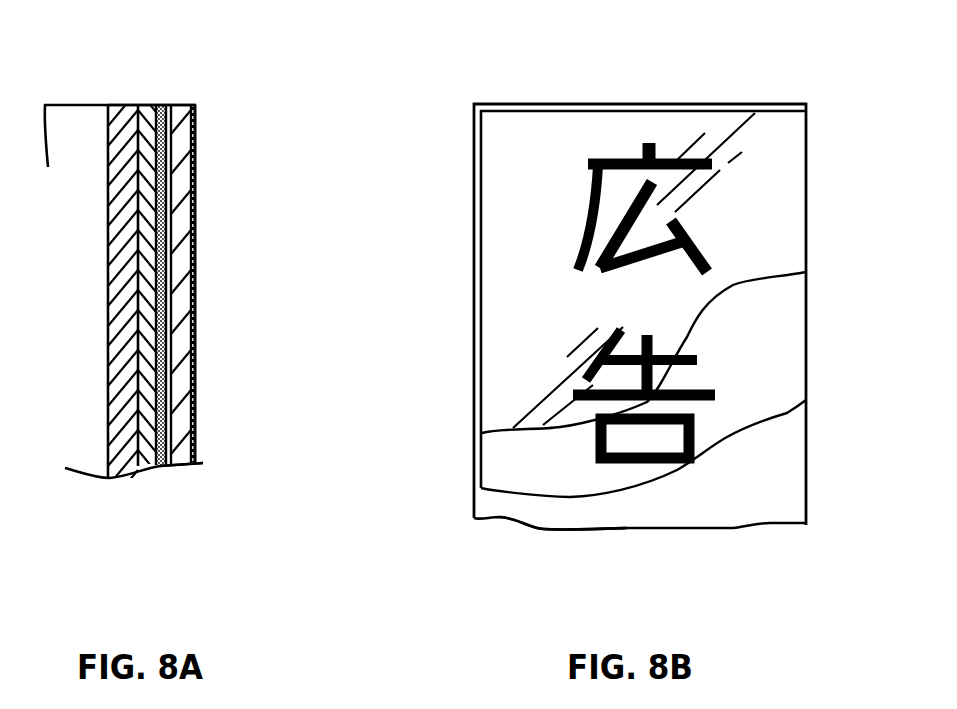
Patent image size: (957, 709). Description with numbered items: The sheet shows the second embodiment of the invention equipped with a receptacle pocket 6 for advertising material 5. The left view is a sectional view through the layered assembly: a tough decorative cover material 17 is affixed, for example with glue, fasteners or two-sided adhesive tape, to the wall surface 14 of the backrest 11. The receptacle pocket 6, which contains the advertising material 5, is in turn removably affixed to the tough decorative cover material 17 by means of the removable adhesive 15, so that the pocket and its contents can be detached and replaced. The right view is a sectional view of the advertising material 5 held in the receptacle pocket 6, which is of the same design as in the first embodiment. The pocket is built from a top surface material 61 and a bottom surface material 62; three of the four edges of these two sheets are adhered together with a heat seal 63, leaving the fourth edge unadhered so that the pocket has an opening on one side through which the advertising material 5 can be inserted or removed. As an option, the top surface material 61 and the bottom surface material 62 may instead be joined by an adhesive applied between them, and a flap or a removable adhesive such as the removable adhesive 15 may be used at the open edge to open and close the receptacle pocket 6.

In FIG. 8A, the advertising material 5 is at (182, 298).
In FIG. 8B, the advertising material 5 is at (750, 328).
In FIG. 8A, the receptacle pocket 6 is at (193, 208).
In FIG. 8B, the receptacle pocket 6 is at (474, 341).
In FIG. 8A, the backrest 11 is at (118, 313).
In FIG. 8A, the wall surface 14 is at (146, 234).
In FIG. 8A, the removable adhesive 15 is at (163, 104).
In FIG. 8A, the tough decorative cover material 17 is at (147, 104).
In FIG. 8A, the top surface material 61 is at (192, 163).
In FIG. 8B, the top surface material 61 is at (500, 399).
In FIG. 8A, the bottom surface material 62 is at (178, 463).
In FIG. 8B, the bottom surface material 62 is at (540, 527).
In FIG. 8B, the heat seal 63 is at (510, 104).